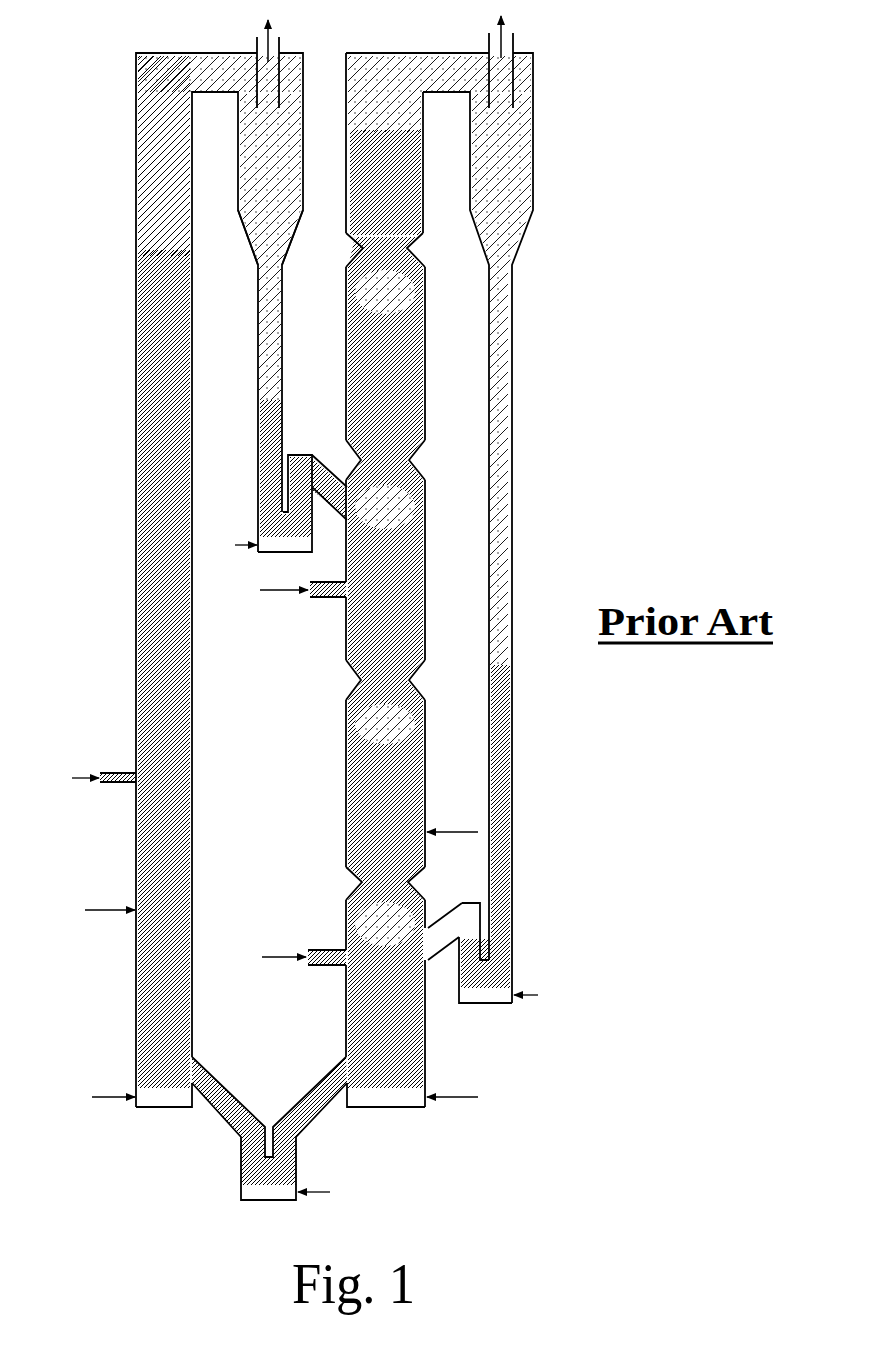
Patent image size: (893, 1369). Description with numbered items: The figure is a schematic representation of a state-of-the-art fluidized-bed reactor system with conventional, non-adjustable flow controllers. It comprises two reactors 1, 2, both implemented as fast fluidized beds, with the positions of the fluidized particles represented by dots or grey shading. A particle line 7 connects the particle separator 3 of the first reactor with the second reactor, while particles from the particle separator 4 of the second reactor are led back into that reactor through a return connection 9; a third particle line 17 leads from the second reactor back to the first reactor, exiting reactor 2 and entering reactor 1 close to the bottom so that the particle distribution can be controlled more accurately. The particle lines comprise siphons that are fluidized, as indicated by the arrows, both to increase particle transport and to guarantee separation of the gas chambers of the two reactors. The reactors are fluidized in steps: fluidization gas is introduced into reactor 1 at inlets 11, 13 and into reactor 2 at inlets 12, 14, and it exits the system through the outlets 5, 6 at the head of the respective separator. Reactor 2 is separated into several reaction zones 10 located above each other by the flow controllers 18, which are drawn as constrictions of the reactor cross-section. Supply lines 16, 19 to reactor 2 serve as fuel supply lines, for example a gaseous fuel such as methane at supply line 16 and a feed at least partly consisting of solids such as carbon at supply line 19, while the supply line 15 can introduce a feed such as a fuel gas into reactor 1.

The first reactor 1 is at (136, 590).
The second reactor 2 is at (340, 725).
The particle separator of the first reactor 3 is at (303, 215).
The particle separator of the second reactor 4 is at (533, 215).
The outlet 5 is at (262, 34).
The outlet 6 is at (492, 30).
The particle line 7 is at (258, 518).
The second loop seal 9 is at (530, 958).
The reaction zones 10 is at (412, 476).
The fluidization gas inlet 11 is at (110, 1090).
The fluidization gas inlet 12 is at (438, 1090).
The fluidization gas inlet 13 is at (108, 904).
The fluidization gas inlet 14 is at (436, 832).
The supply line 15 is at (108, 768).
The supply line 16 is at (308, 950).
The third particle line 17 is at (300, 1182).
The flow controllers 18 is at (412, 250).
The supply line 19 is at (312, 598).